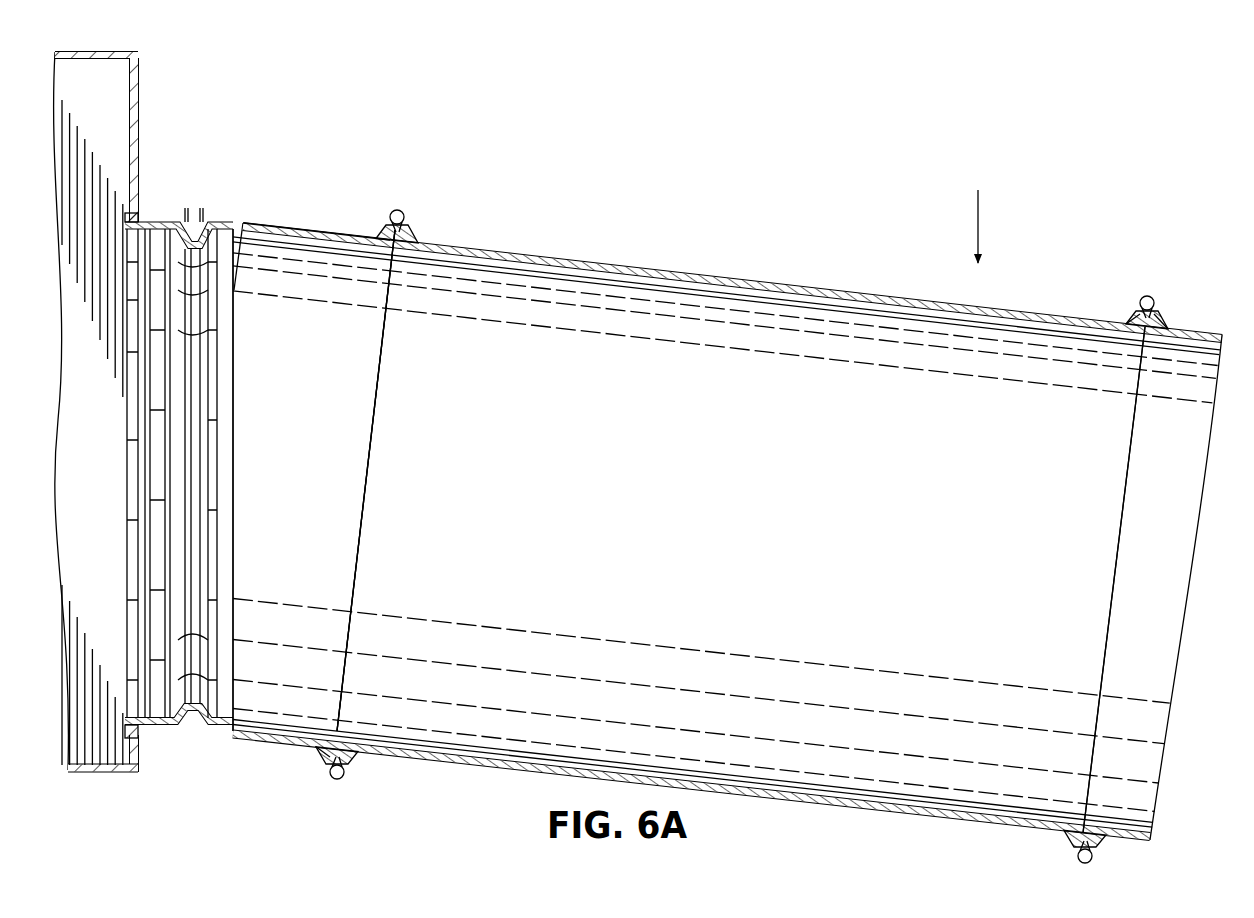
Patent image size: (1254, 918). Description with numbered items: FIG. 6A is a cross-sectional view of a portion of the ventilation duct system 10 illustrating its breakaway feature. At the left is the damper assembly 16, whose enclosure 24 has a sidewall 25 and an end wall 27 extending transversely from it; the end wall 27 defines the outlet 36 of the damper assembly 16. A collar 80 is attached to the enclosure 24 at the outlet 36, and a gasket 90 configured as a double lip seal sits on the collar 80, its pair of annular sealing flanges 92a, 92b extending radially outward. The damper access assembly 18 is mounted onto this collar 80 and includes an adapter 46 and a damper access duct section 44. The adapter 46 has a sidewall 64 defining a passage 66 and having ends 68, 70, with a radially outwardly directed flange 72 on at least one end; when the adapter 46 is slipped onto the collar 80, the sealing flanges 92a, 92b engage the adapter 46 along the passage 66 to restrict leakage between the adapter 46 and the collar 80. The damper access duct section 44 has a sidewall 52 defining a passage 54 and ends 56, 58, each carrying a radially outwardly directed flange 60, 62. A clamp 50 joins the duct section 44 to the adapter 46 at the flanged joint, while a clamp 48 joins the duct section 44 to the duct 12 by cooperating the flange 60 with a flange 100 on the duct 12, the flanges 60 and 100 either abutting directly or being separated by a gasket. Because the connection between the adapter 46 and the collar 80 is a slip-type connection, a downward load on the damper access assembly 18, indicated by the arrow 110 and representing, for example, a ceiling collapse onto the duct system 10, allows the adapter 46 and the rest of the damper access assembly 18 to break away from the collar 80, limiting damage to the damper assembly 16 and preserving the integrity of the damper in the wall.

The ventilation duct system 10 is at (734, 488).
The ventilation duct run 12 is at (1222, 331).
The damper assembly 16 is at (147, 435).
The damper access assembly 18 is at (802, 284).
The enclosure 24 is at (138, 101).
The sidewall 25 is at (95, 774).
The end wall 27 is at (138, 138).
The outlet 36 is at (200, 461).
The damper access duct section 44 is at (542, 256).
The adapter 46 is at (330, 229).
The clamp 48 is at (1148, 296).
The clamp 50 is at (393, 210).
The sidewall 52 is at (585, 264).
The passage 54 is at (741, 531).
The end 56 is at (1130, 440).
The end 58 is at (360, 530).
The radially outwardly directed flange 60 is at (1137, 320).
The radially outwardly directed flange 62 is at (344, 764).
The sidewall 64 is at (272, 226).
The passage 66 is at (264, 480).
The end 68 is at (376, 408).
The end 70 is at (241, 224).
The radially outwardly directed flange 72 is at (326, 759).
The collar 80 is at (140, 733).
The gasket 90 is at (195, 179).
The annular sealing flange 92a is at (186, 222).
The annular sealing flange 92b is at (203, 222).
The flange 100 is at (1156, 320).
The arrow 110 is at (980, 216).